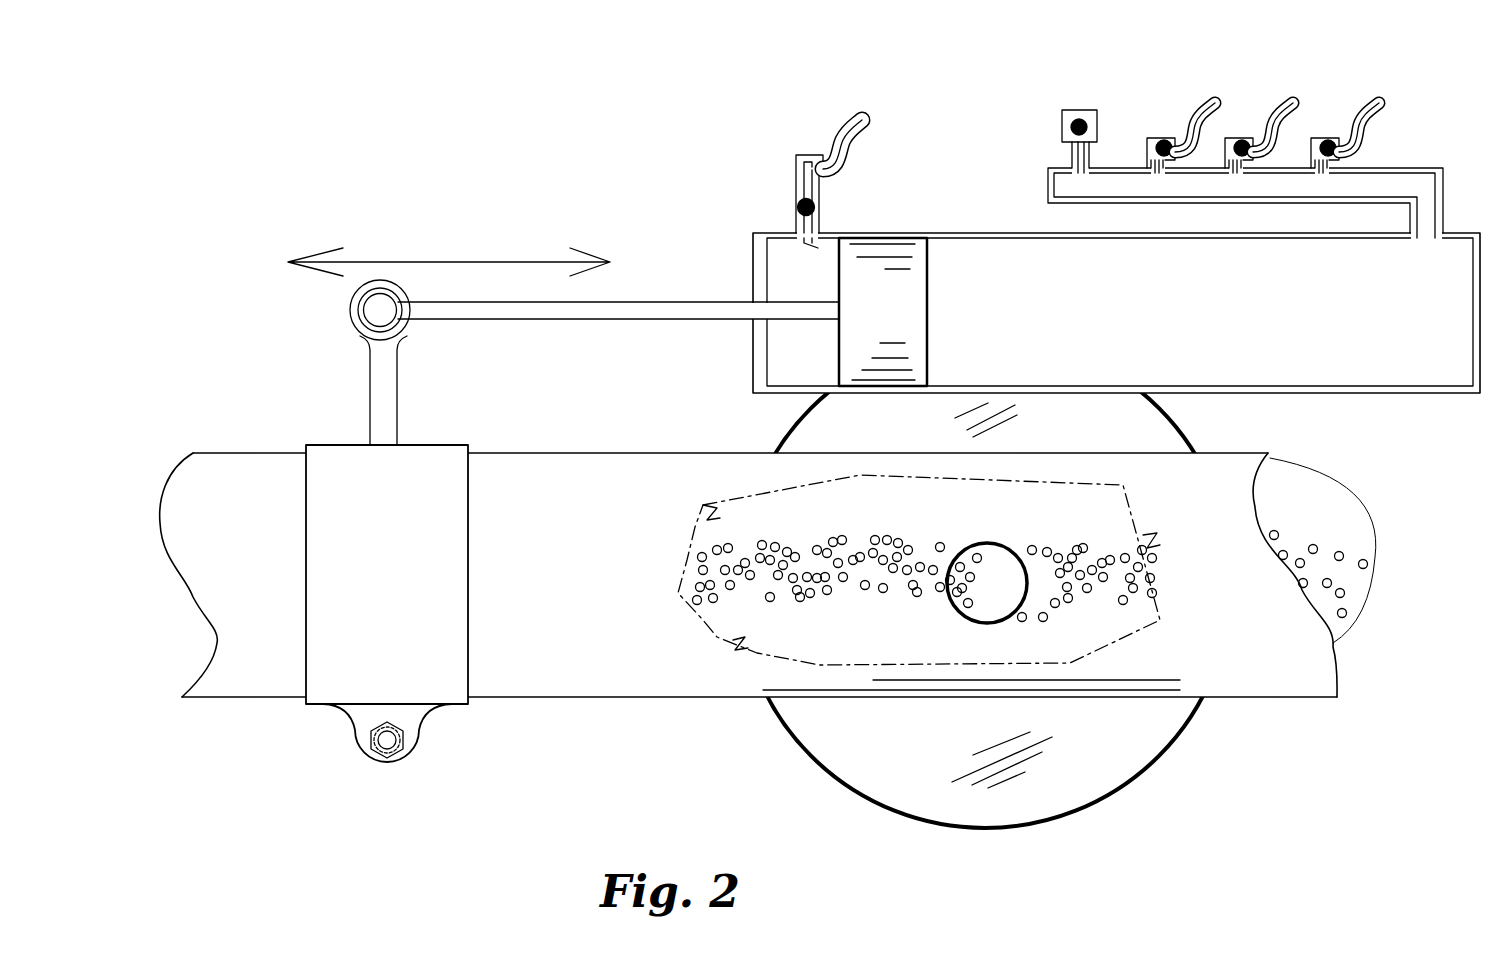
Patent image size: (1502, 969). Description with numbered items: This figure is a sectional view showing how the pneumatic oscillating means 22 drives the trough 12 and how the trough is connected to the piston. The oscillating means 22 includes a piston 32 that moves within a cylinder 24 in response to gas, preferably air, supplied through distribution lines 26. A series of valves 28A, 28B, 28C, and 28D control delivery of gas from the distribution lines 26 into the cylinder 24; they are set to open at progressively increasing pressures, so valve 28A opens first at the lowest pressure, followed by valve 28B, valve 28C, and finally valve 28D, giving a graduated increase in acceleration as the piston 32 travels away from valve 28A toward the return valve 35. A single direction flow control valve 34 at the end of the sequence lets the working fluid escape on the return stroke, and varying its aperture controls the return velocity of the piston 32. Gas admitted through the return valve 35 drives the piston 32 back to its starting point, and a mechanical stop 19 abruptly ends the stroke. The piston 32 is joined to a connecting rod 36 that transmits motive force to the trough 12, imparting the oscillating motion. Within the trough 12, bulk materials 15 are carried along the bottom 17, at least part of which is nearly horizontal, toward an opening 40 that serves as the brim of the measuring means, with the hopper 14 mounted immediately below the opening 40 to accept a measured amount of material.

The oscillating trough 12 is at (650, 700).
The hopper 14 is at (1168, 755).
The bulk materials 15 is at (933, 603).
The bottom 17 is at (1007, 521).
The mechanical stop 19 is at (826, 386).
The oscillating means 22 is at (703, 214).
The cylinder 24 is at (1079, 278).
The distribution lines 26 is at (1213, 100).
The valve 28A is at (1317, 137).
The valve 28B is at (1232, 137).
The valve 28C is at (1155, 137).
The valve 28D is at (1026, 109).
The piston 32 is at (864, 311).
The single direction flow control valve 34 is at (1062, 122).
The return valve 35 is at (795, 173).
The connecting rod 36 is at (530, 322).
The opening 40 is at (977, 542).